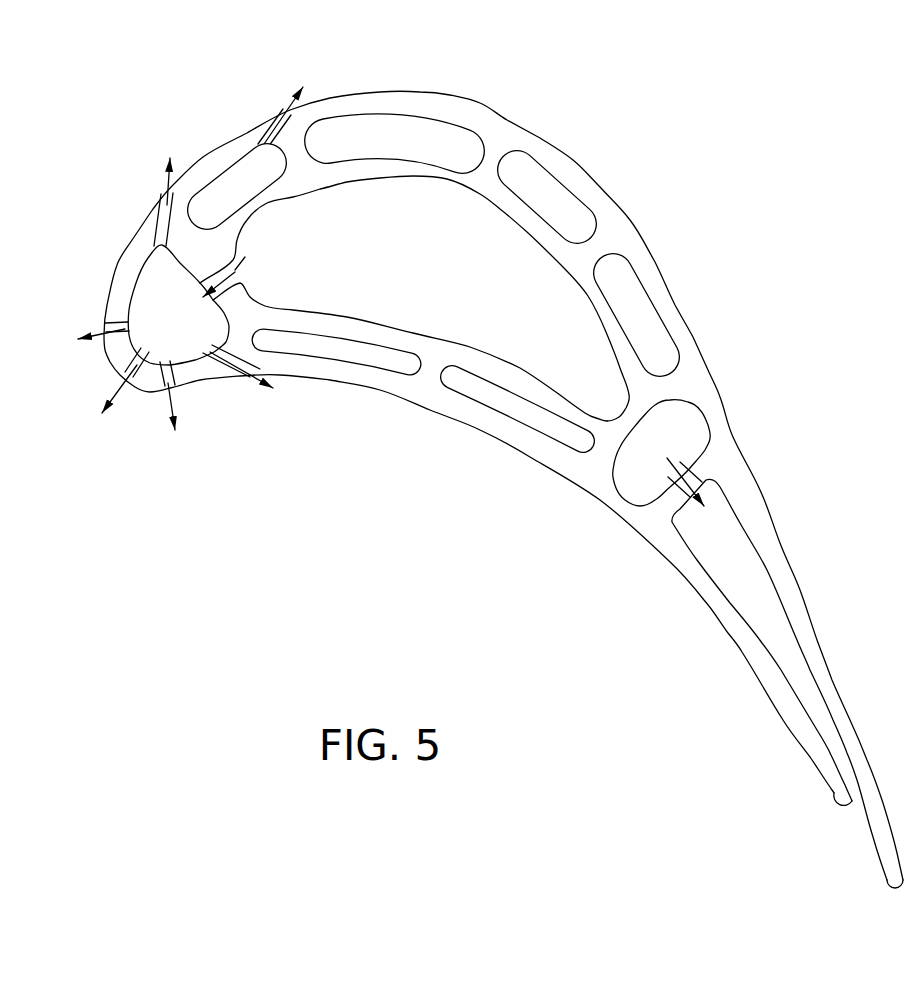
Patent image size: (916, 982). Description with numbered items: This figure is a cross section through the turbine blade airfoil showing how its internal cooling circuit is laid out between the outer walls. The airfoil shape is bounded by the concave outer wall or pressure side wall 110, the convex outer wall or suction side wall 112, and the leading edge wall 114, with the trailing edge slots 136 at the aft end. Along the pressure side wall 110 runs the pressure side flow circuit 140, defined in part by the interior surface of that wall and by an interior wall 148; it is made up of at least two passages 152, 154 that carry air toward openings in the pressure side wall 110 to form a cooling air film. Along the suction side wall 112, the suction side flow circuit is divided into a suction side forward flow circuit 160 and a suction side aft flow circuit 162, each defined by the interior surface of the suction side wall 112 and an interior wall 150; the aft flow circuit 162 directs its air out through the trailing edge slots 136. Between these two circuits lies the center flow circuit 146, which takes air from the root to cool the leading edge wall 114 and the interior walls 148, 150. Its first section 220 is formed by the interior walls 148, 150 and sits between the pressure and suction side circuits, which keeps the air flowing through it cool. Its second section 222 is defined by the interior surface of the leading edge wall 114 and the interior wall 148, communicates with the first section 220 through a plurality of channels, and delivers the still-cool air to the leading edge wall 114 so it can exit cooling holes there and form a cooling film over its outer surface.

The concave outer wall 110 is at (527, 453).
The convex outer wall 112 is at (322, 97).
The leading edge wall 114 is at (108, 360).
The trailing edge slots 136 is at (858, 806).
The pressure side flow circuit 140 is at (388, 363).
The center flow circuit 146 is at (303, 285).
The interior wall 148 is at (357, 323).
The interior wall 150 is at (348, 174).
The passage 152 is at (303, 348).
The passage 154 is at (562, 445).
The suction side forward flow circuit 160 is at (237, 167).
The suction side aft flow circuit 162 is at (688, 423).
The first section 220 is at (467, 282).
The second section 222 is at (143, 332).